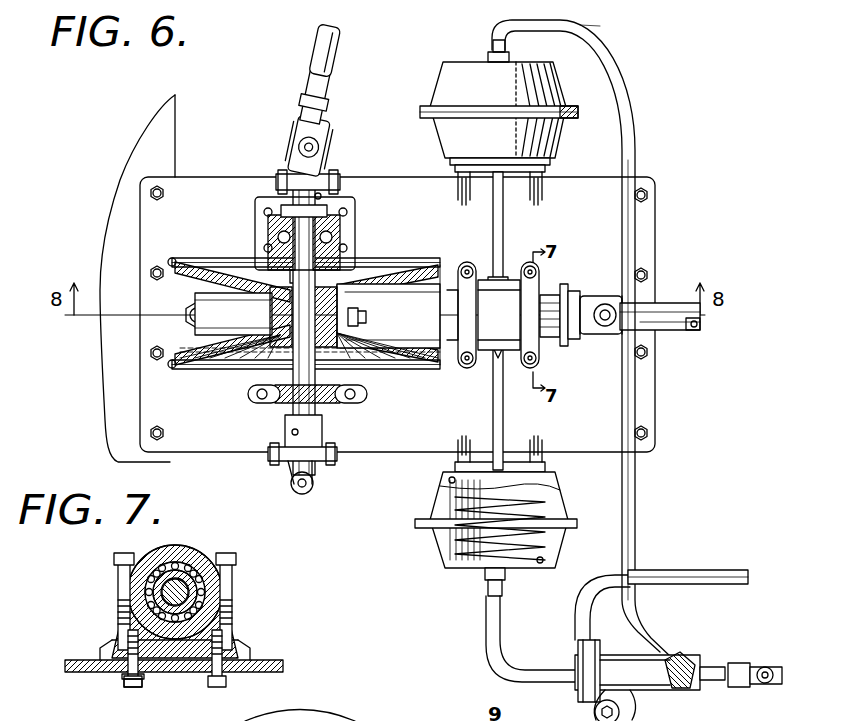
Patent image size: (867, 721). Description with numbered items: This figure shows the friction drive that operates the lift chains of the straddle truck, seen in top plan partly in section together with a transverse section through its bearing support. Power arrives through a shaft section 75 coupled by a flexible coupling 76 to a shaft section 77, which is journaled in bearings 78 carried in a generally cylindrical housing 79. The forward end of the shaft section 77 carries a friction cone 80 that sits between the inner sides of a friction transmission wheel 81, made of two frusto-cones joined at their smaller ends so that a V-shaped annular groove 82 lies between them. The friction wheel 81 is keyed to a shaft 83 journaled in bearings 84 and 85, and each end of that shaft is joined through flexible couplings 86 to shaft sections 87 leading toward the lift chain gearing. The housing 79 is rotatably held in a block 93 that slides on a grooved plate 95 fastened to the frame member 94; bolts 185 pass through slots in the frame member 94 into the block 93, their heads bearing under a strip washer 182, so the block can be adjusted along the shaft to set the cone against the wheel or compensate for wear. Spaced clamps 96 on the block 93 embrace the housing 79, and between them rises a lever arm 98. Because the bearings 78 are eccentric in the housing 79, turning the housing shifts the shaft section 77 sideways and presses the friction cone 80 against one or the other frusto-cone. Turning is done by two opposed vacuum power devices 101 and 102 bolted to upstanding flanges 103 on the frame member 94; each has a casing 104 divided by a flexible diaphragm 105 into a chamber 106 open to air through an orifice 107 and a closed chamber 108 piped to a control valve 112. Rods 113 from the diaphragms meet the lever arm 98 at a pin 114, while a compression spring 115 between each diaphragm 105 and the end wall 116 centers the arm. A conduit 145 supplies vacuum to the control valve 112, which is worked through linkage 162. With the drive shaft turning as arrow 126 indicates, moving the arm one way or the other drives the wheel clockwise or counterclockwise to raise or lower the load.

In FIG. 6, the shaft section 75 is at (667, 316).
In FIG. 6, the flexible coupling 76 is at (590, 296).
In FIG. 7, the shaft section 77 is at (178, 586).
In FIG. 7, the bearings 78 is at (188, 574).
In FIG. 6, the housing 79 is at (517, 297).
In FIG. 7, the housing 79 is at (228, 620).
In FIG. 6, the friction cone 80 is at (410, 272).
In FIG. 6, the friction transmission wheel 81 is at (295, 298).
In FIG. 6, the V-shaped annular groove 82 is at (198, 280).
In FIG. 6, the shaft 83 is at (318, 408).
In FIG. 6, the bearing 84 is at (272, 400).
In FIG. 6, the bearing 85 is at (345, 222).
In FIG. 6, the flexible couplings 86 is at (313, 258).
In FIG. 6, the shaft sections 87 is at (338, 68).
In FIG. 7, the block 93 is at (160, 587).
In FIG. 6, the frame member 94 is at (178, 153).
In FIG. 6, the grooved plate 95 is at (606, 190).
In FIG. 7, the grooved plate 95 is at (276, 664).
In FIG. 6, the clamps 96 is at (466, 270).
In FIG. 7, the clamps 96 is at (208, 560).
In FIG. 6, the lever arm 98 is at (648, 671).
In FIG. 6, the vacuum power device 101 is at (440, 108).
In FIG. 6, the vacuum power device 102 is at (425, 521).
In FIG. 6, the upstanding flanges 103 is at (442, 160).
In FIG. 6, the casing 104 is at (437, 502).
In FIG. 6, the flexible diaphragm 105 is at (445, 534).
In FIG. 6, the chamber 106 is at (482, 527).
In FIG. 6, the orifice 107 is at (448, 482).
In FIG. 6, the chamber 108 is at (556, 548).
In FIG. 6, the control valve 112 is at (684, 657).
In FIG. 6, the rod 113 is at (498, 219).
In FIG. 6, the pin 114 is at (440, 310).
In FIG. 6, the compression spring 115 is at (525, 578).
In FIG. 6, the end wall 116 is at (542, 561).
In FIG. 6, the arrow 126 is at (673, 332).
In FIG. 6, the conduit 145 is at (698, 574).
In FIG. 6, the linkage 162 is at (776, 666).
In FIG. 7, the strip washer 182 is at (130, 679).
In FIG. 7, the bolts 185 is at (138, 688).